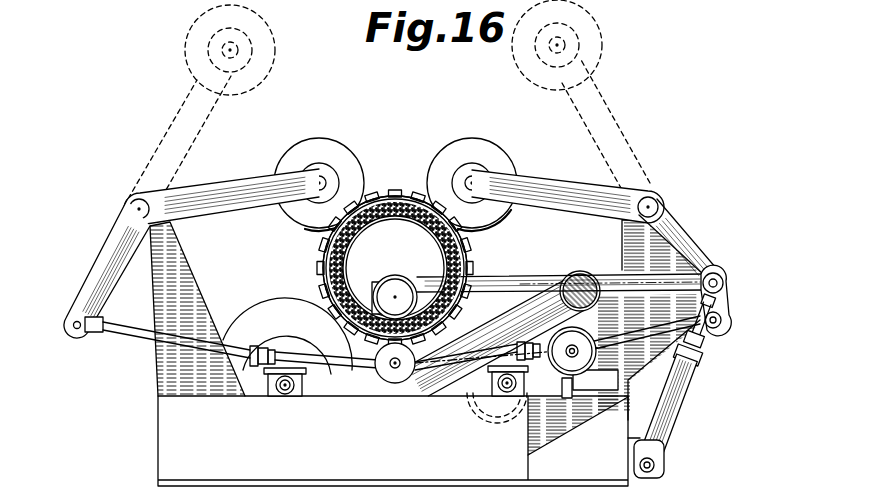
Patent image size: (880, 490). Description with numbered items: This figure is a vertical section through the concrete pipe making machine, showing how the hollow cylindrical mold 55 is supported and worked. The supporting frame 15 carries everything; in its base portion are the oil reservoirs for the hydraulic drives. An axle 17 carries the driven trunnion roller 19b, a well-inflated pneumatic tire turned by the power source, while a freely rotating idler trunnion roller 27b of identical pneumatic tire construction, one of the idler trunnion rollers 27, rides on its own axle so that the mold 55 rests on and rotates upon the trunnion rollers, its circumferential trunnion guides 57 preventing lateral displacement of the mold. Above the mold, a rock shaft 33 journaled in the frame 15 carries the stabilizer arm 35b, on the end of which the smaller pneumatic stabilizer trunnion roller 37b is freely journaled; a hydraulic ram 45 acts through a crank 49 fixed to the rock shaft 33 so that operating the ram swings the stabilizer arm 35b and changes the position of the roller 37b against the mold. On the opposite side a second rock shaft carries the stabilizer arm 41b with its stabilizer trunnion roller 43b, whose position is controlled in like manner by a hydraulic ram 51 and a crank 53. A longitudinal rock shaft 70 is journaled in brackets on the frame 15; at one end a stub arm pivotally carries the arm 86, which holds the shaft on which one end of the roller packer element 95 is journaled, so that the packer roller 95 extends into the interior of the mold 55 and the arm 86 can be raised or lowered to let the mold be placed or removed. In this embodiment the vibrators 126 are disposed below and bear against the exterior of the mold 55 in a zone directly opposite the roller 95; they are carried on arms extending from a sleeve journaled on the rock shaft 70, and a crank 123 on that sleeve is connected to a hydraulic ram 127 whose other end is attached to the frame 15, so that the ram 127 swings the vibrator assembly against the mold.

The supporting frame 15 is at (162, 428).
The axle 17 is at (358, 378).
The trunnion roller 19b is at (508, 302).
The idler trunnion roller 27 is at (287, 396).
The idler trunnion roller 27b is at (260, 314).
The rock shaft 33 is at (136, 198).
The stabilizer arm 35b is at (229, 186).
The stabilizer trunnion roller 37b is at (333, 150).
The stabilizer arm 41b is at (548, 186).
The stabilizer trunnion roller 43b is at (493, 153).
The hydraulic ram 45 is at (321, 384).
The crank 49 is at (100, 263).
The hydraulic ram 51 is at (470, 386).
The crank 53 is at (686, 252).
The hollow cylindrical mold 55 is at (377, 243).
The circumferential trunnion guide 57 is at (316, 247).
The rock shaft 70 is at (578, 271).
The arm 86 is at (491, 276).
The roller packer element 95 is at (399, 279).
The crank 123 is at (700, 280).
The vibrator 126 is at (395, 378).
The hydraulic ram 127 is at (688, 394).